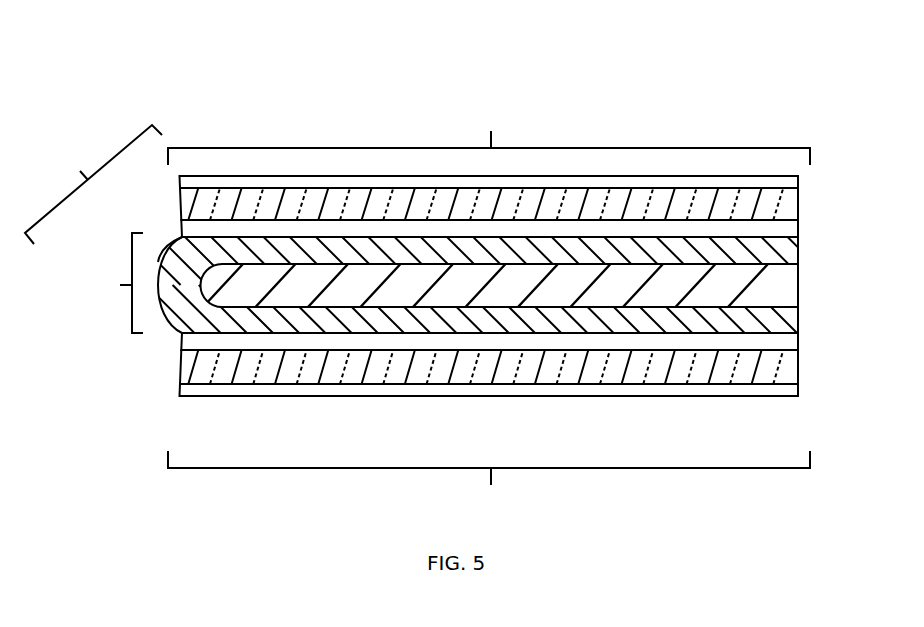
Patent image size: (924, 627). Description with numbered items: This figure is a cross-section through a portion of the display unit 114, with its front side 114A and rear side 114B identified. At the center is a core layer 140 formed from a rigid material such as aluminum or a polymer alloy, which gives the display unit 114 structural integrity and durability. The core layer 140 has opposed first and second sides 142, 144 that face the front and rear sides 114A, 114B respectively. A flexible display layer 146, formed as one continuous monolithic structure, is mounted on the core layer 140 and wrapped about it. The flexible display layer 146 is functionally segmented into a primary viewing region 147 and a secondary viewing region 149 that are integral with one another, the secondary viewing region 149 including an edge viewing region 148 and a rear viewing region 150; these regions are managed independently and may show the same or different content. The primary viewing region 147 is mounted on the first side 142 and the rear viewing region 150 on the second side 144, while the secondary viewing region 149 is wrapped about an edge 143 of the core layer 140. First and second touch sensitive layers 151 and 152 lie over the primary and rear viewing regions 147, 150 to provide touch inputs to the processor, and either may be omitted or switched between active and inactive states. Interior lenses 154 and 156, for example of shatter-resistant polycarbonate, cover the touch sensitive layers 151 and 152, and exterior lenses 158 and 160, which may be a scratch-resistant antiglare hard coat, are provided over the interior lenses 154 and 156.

The display unit 114 is at (125, 87).
The front side 114A is at (568, 402).
The rear side 114B is at (340, 103).
The core layer 140 is at (782, 287).
The first side 142 is at (783, 323).
The edge 143 is at (181, 239).
The second side 144 is at (785, 252).
The flexible display layer 146 is at (502, 335).
The primary viewing region 147 is at (489, 483).
The edge viewing region 148 is at (131, 283).
The secondary viewing region 149 is at (93, 184).
The rear viewing region 150 is at (489, 136).
The first touch sensitive layer 151 is at (788, 347).
The second touch sensitive layer 152 is at (780, 232).
The interior lens 154 is at (782, 372).
The interior lens 156 is at (782, 205).
The exterior lens 158 is at (782, 390).
The exterior lens 160 is at (788, 183).